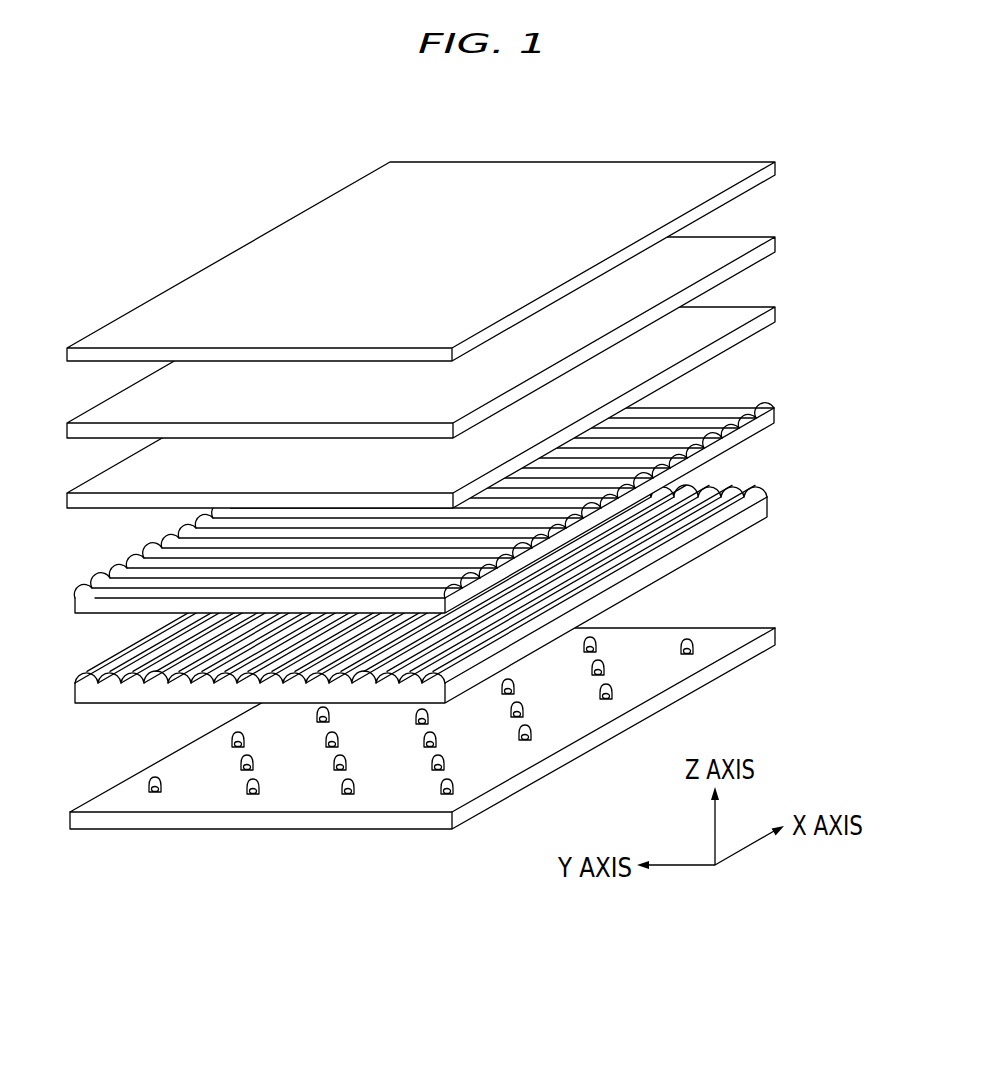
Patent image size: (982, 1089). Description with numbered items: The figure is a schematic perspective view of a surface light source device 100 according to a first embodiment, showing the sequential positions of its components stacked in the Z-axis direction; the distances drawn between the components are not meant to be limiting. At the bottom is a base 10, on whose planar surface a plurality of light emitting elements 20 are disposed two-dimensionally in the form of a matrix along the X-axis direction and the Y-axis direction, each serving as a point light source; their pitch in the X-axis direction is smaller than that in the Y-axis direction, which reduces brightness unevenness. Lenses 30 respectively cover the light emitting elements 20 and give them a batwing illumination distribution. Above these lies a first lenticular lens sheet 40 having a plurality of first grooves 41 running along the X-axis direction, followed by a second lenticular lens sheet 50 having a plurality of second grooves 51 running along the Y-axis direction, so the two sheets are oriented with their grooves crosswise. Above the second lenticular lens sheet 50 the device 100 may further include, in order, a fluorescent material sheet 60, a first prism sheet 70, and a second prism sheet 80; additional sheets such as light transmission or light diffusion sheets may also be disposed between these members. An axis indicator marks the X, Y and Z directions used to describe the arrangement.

The surface light source device 100 is at (603, 110).
The base 10 is at (643, 688).
The light emitting elements 20 is at (710, 654).
The lenses 30 is at (725, 648).
The first lenticular lens sheet 40 is at (450, 708).
The first grooves 41 is at (366, 684).
The second lenticular lens sheet 50 is at (473, 508).
The second grooves 51 is at (712, 455).
The fluorescent material sheet 60 is at (777, 309).
The first prism sheet 70 is at (777, 238).
The second prism sheet 80 is at (777, 163).